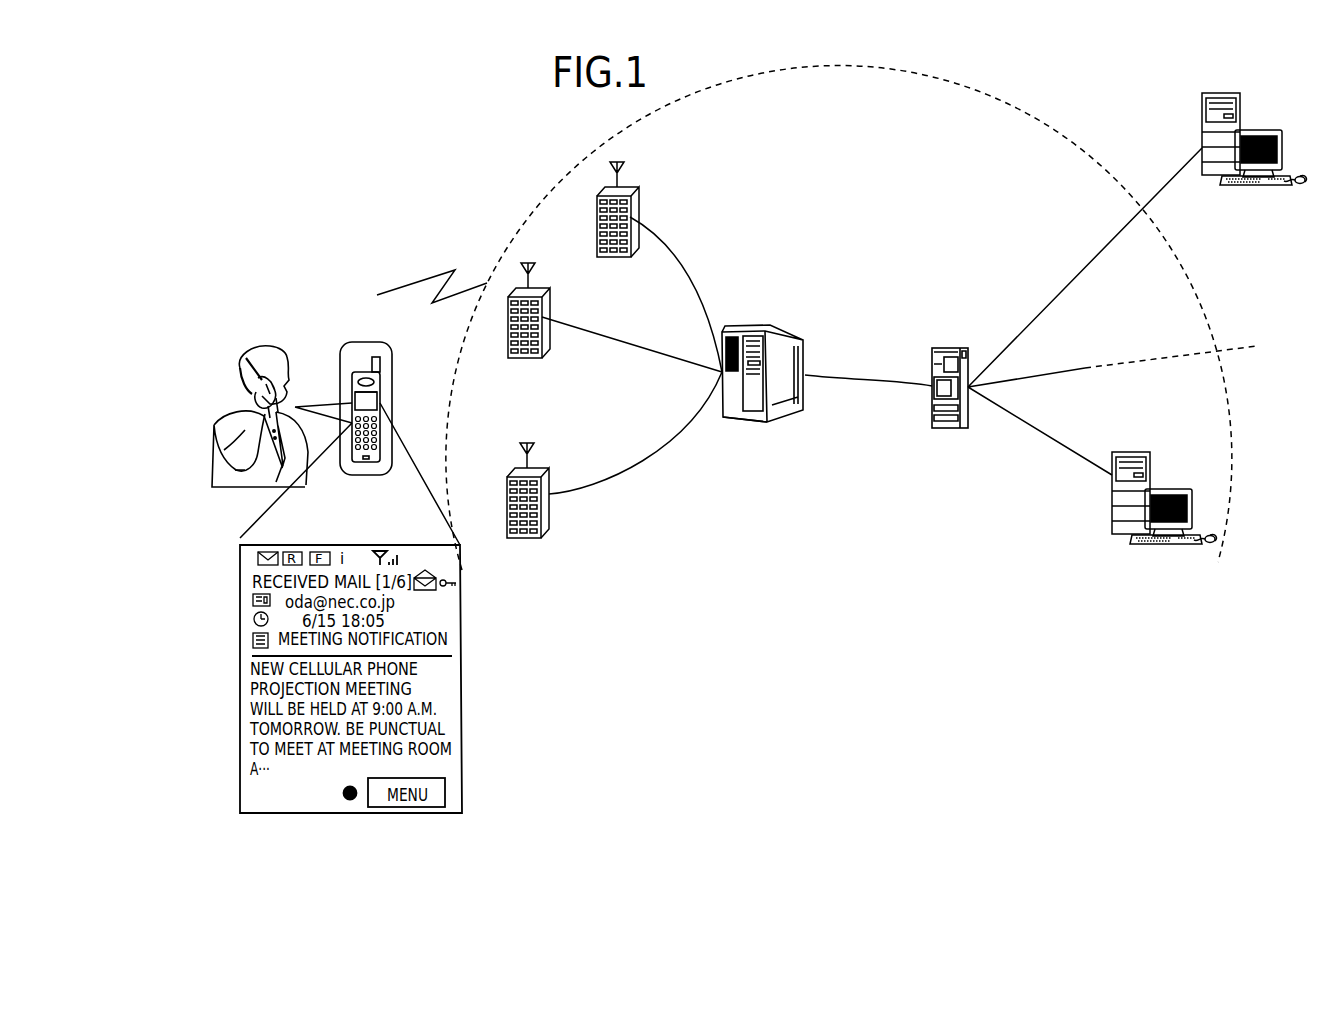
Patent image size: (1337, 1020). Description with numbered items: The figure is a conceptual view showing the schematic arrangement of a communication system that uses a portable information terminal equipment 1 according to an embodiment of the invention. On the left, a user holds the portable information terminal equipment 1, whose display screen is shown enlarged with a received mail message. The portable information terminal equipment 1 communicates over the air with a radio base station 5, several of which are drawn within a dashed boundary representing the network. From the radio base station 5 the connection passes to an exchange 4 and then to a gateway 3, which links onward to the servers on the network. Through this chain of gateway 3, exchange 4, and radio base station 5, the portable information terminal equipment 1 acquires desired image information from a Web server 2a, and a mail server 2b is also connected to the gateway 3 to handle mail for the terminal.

The portable information terminal equipment 1 is at (363, 372).
The Web server 2a is at (1267, 187).
The mail server 2b is at (1112, 530).
The gateway 3 is at (968, 415).
The exchange 4 is at (783, 422).
The radio base station 5 is at (639, 247).